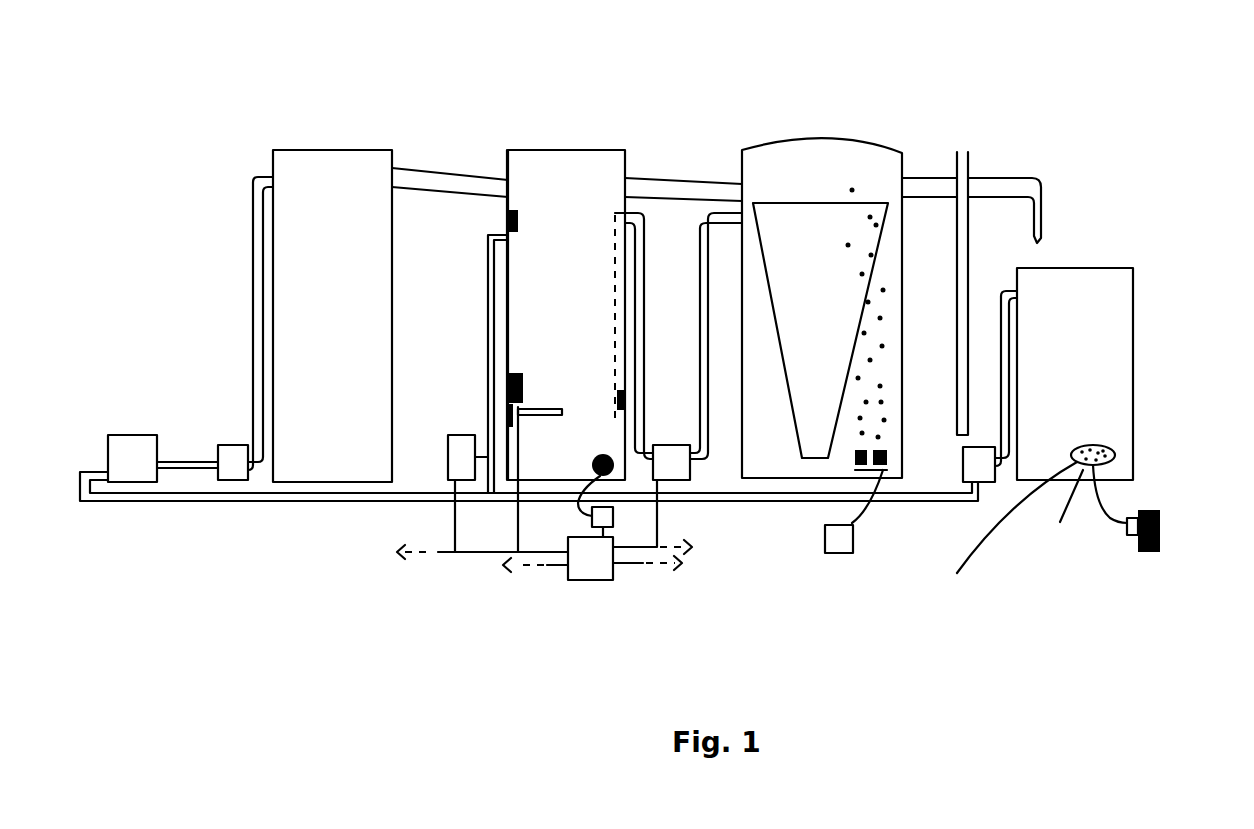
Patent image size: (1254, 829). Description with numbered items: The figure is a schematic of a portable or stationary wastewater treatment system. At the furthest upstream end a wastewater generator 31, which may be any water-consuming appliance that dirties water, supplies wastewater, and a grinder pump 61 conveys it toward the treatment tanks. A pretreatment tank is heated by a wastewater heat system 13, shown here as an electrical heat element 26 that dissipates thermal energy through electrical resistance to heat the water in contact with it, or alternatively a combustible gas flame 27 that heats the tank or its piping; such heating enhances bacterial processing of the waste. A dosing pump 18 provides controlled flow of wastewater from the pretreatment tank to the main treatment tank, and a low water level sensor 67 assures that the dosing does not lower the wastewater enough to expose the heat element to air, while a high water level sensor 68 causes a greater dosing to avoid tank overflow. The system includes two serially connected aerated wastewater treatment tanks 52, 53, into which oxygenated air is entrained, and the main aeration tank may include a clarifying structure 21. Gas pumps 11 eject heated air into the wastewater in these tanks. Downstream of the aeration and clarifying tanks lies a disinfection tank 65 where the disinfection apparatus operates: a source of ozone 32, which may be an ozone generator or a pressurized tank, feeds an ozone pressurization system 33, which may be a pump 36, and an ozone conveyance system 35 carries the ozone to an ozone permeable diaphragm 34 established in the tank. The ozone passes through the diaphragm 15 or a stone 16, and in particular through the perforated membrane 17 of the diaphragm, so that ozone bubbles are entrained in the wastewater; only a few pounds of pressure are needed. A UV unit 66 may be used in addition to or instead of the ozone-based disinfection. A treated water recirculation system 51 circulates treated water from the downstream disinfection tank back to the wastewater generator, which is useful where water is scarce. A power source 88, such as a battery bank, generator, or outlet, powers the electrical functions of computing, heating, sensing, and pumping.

The gas pump 11 is at (613, 517).
The wastewater heat system 13 is at (468, 409).
The diaphragm 15 is at (1057, 518).
The stone 16 is at (852, 470).
The perforated membrane 17 is at (1117, 457).
The dosing pump 18 is at (668, 480).
The clarifying structure 21 is at (785, 195).
The electrical heat element 26 is at (512, 427).
The combustible gas flame 27 is at (507, 388).
The wastewater generator 31 is at (127, 427).
The source of ozone 32 is at (1163, 543).
The ozone pressurization system 33 is at (1141, 570).
The ozone permeable diaphragm 34 is at (1002, 541).
The ozone conveyance system 35 is at (1102, 517).
The pump 36 is at (1122, 543).
The treated water recirculation system 51 is at (325, 503).
The aerated wastewater treatment tank 52 is at (513, 140).
The aerated wastewater treatment tank 53 is at (868, 132).
The grinder pump 61 is at (225, 483).
The disinfection tank 65 is at (1137, 427).
The UV unit 66 is at (973, 130).
The low water level sensor 67 is at (627, 398).
The high water level sensor 68 is at (508, 220).
The power source 88 is at (593, 582).